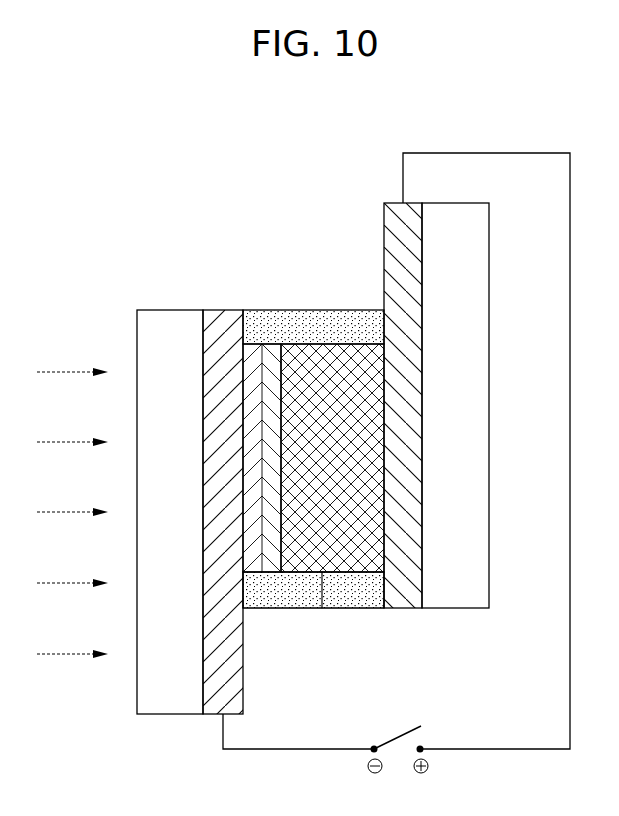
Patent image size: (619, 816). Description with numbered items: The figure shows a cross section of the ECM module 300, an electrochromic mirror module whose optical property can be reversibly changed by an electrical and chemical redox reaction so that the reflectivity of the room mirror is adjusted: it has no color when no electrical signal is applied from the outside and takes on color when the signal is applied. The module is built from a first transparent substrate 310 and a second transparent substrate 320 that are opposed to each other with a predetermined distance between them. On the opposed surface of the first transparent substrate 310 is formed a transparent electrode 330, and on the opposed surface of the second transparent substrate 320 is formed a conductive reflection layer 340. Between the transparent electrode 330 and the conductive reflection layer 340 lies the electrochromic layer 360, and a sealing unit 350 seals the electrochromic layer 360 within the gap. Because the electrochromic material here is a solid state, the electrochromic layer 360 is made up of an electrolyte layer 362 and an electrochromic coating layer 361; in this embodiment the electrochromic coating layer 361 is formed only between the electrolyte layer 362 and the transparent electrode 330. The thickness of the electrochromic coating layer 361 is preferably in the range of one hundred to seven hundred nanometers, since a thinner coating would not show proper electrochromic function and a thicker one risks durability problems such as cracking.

The ECM module 300 is at (167, 154).
The first transparent substrate 310 is at (175, 325).
The second transparent substrate 320 is at (460, 212).
The transparent electrode 330 is at (228, 325).
The conductive reflection layer 340 is at (386, 205).
The sealing unit 350 is at (316, 328).
The electrochromic layer 360 is at (331, 671).
The electrochromic coating layer 361 is at (266, 609).
The electrolyte layer 362 is at (327, 609).